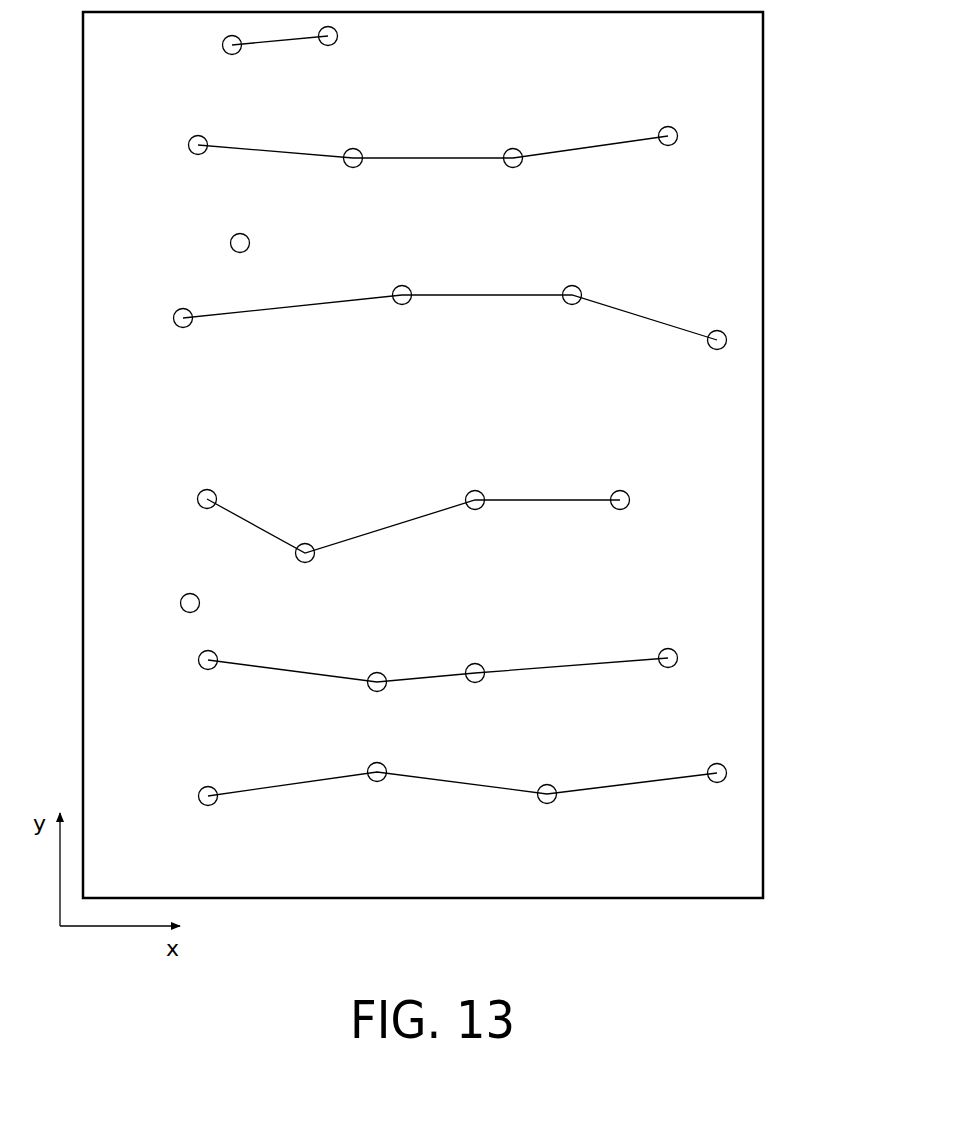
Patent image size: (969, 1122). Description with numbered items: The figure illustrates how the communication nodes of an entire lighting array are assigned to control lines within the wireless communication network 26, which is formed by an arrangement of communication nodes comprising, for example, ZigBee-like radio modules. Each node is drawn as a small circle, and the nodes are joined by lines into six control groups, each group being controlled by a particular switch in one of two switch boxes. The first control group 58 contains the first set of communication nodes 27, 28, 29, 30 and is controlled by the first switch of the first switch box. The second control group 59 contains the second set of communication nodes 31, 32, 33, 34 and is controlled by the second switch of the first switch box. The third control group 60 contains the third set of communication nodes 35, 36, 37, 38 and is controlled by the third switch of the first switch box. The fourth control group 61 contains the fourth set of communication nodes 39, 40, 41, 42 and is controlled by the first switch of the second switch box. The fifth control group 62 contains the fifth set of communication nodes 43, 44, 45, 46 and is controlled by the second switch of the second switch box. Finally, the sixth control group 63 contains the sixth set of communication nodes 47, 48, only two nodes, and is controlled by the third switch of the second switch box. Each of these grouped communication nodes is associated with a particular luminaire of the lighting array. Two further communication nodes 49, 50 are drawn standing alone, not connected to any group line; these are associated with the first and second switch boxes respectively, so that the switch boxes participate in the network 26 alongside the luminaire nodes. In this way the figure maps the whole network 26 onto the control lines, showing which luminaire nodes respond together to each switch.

The wireless communication network 26 is at (766, 81).
The communication node 27 is at (717, 783).
The communication node 28 is at (547, 804).
The communication node 29 is at (377, 782).
The communication node 30 is at (208, 806).
The communication node 31 is at (668, 668).
The communication node 32 is at (475, 683).
The communication node 33 is at (377, 692).
The communication node 34 is at (208, 670).
The communication node 35 is at (620, 510).
The communication node 36 is at (475, 510).
The communication node 37 is at (305, 563).
The communication node 38 is at (207, 509).
The communication node 39 is at (717, 350).
The communication node 40 is at (572, 305).
The communication node 41 is at (402, 305).
The communication node 42 is at (183, 328).
The communication node 43 is at (668, 146).
The communication node 44 is at (513, 168).
The communication node 45 is at (353, 168).
The communication node 46 is at (198, 155).
The communication node 47 is at (328, 46).
The communication node 48 is at (232, 55).
The communication node 49 is at (180, 603).
The communication node 50 is at (230, 243).
The first control group 58 is at (615, 800).
The second control group 59 is at (575, 680).
The third control group 60 is at (532, 520).
The fourth control group 61 is at (478, 315).
The fifth control group 62 is at (568, 168).
The sixth control group 63 is at (268, 62).